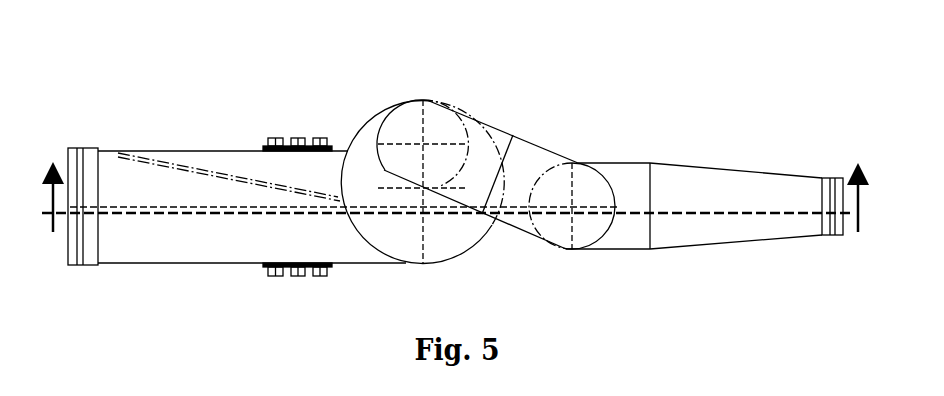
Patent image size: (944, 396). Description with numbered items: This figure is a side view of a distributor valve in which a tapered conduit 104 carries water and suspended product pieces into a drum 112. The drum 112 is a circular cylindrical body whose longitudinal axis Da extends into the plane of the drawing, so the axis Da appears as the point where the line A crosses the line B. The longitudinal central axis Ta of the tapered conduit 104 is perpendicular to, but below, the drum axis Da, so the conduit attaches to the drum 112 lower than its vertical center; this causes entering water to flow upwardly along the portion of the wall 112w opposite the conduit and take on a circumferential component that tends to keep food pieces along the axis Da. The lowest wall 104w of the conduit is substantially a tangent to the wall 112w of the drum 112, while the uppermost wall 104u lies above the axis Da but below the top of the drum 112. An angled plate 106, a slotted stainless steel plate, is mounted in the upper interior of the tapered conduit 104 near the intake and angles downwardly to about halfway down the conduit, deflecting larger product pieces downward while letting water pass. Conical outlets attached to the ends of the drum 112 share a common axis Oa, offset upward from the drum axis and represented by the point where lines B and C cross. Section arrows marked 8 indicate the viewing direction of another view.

The section line for FIG. 8 is at (455, 186).
The tapered conduit 104 is at (237, 206).
The uppermost wall 104u is at (163, 156).
The lowest wall 104w is at (163, 262).
The angled plate 106 is at (192, 158).
The drum 112 is at (574, 182).
The wall of the drum 112w is at (477, 245).
The longitudinal central axis of the tapered conduit Ta is at (140, 207).
The coaxial axes of the outlet tubes Oa is at (446, 131).
The line A is at (390, 188).
The line B is at (425, 242).
The line C is at (447, 143).
The longitudinal central axis of the drum Da is at (418, 198).